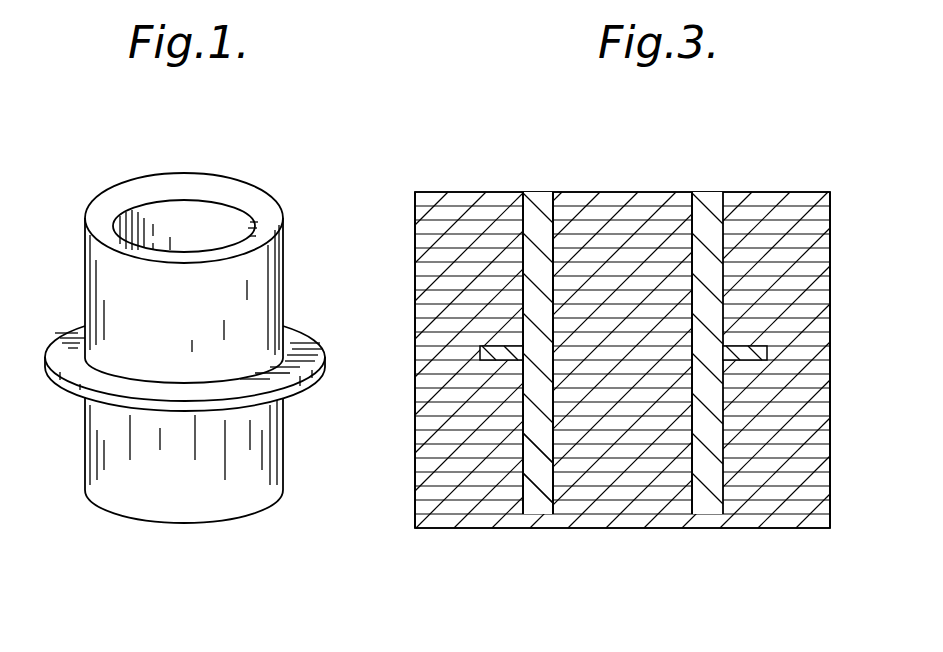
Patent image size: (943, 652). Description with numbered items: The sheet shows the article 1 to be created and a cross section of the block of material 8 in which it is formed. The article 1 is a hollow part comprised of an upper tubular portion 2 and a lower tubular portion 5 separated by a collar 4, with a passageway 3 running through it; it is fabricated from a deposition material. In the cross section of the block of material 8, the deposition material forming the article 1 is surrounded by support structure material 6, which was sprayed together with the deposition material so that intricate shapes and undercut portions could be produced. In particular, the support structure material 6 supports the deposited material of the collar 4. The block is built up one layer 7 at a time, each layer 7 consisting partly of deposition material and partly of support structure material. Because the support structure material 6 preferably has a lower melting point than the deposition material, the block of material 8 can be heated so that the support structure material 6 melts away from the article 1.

In FIG. 1, the article 1 is at (204, 184).
In FIG. 3, the article 1 is at (545, 182).
In FIG. 1, the upper tubular portion 2 is at (118, 290).
In FIG. 3, the upper tubular portion 2 is at (548, 268).
In FIG. 1, the passageway 3 is at (166, 230).
In FIG. 3, the passageway 3 is at (553, 463).
In FIG. 1, the collar 4 is at (97, 374).
In FIG. 3, the collar 4 is at (492, 356).
In FIG. 1, the lower tubular portion 5 is at (177, 492).
In FIG. 3, the lower tubular portion 5 is at (538, 480).
In FIG. 3, the support structure material 6 is at (470, 222).
In FIG. 3, the layer 7 is at (832, 228).
In FIG. 3, the block of material 8 is at (410, 412).